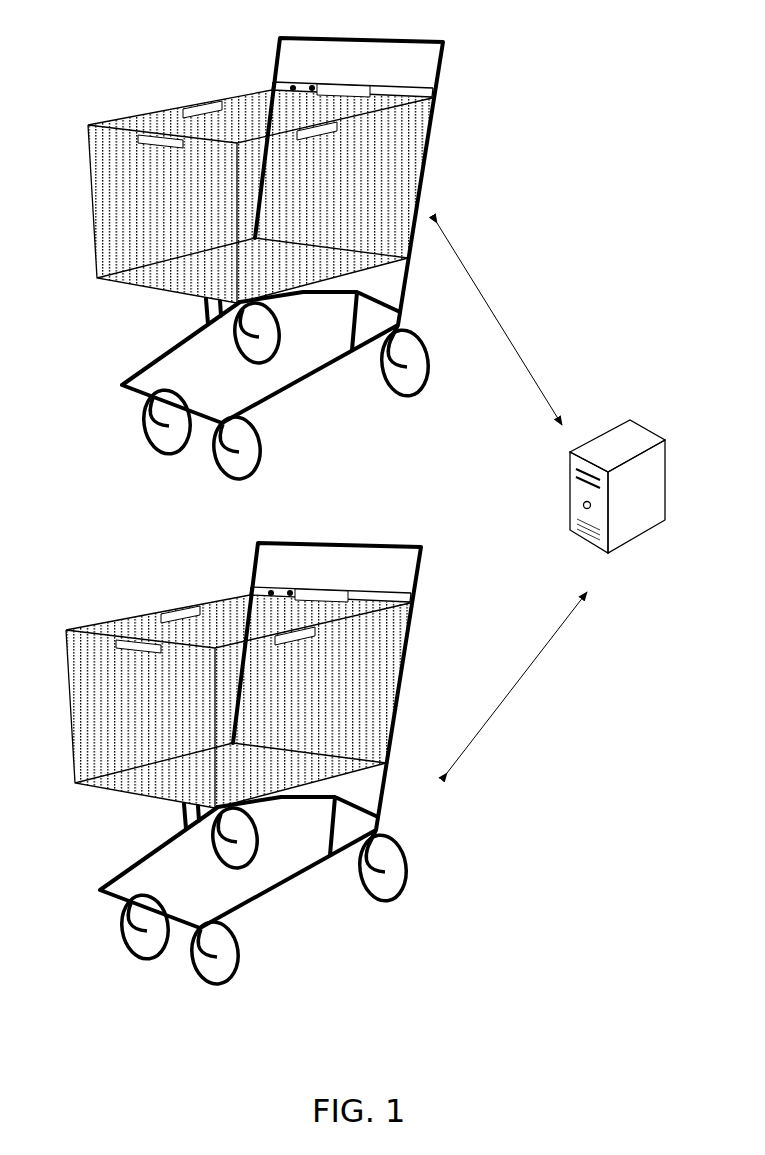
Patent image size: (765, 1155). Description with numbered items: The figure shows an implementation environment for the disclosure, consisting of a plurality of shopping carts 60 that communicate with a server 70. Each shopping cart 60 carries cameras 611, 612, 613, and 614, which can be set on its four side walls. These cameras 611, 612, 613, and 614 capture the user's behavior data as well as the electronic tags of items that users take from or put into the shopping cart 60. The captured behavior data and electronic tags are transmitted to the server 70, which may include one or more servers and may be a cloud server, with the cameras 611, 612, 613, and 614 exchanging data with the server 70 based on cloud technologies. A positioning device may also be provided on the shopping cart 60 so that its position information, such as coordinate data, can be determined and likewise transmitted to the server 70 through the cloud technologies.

The shopping cart 60 is at (442, 70).
The camera 611 is at (355, 89).
The camera 612 is at (313, 133).
The camera 613 is at (137, 143).
The camera 614 is at (208, 106).
The server 70 is at (650, 432).